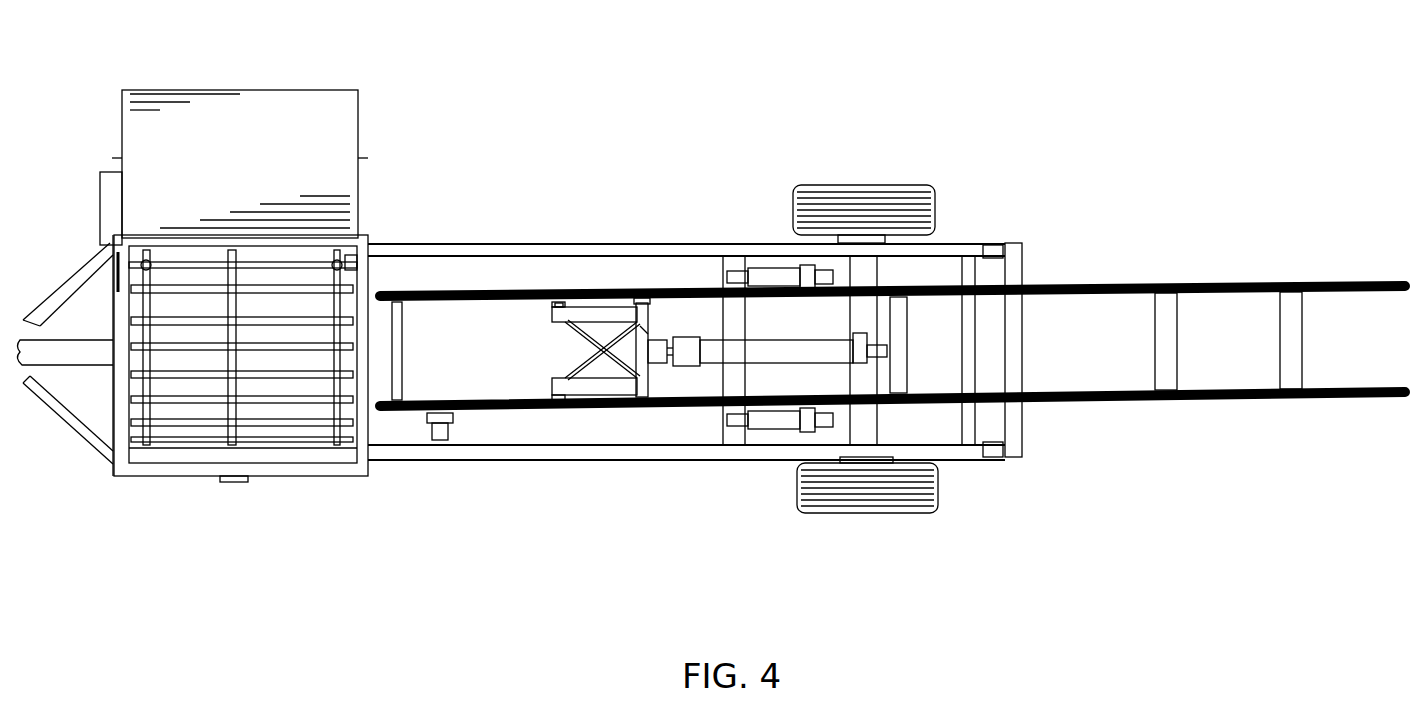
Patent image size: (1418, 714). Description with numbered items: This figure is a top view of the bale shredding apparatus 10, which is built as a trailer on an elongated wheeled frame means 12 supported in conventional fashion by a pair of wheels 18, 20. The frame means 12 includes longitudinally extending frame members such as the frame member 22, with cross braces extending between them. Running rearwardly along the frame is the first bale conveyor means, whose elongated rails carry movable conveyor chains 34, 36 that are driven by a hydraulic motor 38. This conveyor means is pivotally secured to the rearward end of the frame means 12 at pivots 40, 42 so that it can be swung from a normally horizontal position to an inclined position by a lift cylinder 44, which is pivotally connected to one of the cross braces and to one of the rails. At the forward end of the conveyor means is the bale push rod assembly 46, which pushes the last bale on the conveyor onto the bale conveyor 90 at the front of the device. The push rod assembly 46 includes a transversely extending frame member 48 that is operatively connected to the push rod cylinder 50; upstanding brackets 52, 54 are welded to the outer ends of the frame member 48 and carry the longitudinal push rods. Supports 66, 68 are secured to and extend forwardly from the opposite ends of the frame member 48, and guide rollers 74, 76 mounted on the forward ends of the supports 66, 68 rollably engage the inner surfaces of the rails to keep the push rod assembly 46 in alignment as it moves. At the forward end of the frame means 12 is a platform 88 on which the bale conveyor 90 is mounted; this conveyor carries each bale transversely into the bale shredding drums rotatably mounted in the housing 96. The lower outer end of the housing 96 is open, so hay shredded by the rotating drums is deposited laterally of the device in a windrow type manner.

The bale shredding apparatus 10 is at (668, 120).
The wheeled frame means 12 is at (514, 466).
The wheel 18 is at (898, 513).
The wheel 20 is at (897, 187).
The longitudinally extending frame member 22 is at (397, 252).
The conveyor chain 34 is at (1252, 403).
The conveyor chain 36 is at (1135, 282).
The hydraulic motor 38 is at (437, 440).
The pivot 40 is at (993, 457).
The pivot 42 is at (997, 245).
The lift cylinder 44 is at (785, 431).
The bale push rod assembly 46 is at (599, 294).
The transversely extending frame member 48 is at (647, 330).
The push rod cylinder 50 is at (707, 370).
The upstanding bracket 52 is at (646, 398).
The upstanding bracket 54 is at (640, 300).
The support 66 is at (597, 396).
The support 68 is at (552, 315).
The guide roller 74 is at (553, 390).
The guide roller 76 is at (555, 307).
The platform 88 is at (104, 411).
The bale conveyor 90 is at (344, 248).
The housing 96 is at (348, 117).